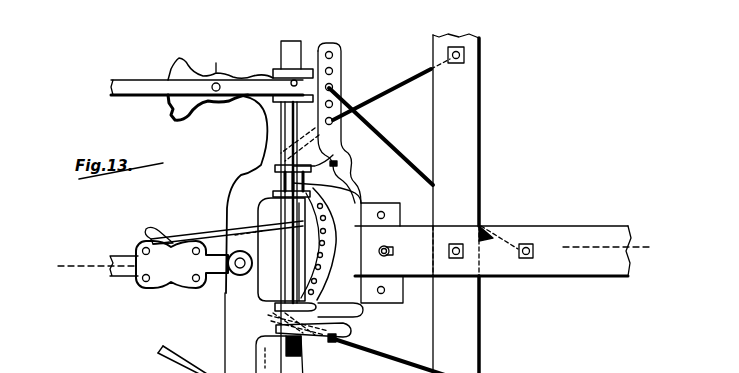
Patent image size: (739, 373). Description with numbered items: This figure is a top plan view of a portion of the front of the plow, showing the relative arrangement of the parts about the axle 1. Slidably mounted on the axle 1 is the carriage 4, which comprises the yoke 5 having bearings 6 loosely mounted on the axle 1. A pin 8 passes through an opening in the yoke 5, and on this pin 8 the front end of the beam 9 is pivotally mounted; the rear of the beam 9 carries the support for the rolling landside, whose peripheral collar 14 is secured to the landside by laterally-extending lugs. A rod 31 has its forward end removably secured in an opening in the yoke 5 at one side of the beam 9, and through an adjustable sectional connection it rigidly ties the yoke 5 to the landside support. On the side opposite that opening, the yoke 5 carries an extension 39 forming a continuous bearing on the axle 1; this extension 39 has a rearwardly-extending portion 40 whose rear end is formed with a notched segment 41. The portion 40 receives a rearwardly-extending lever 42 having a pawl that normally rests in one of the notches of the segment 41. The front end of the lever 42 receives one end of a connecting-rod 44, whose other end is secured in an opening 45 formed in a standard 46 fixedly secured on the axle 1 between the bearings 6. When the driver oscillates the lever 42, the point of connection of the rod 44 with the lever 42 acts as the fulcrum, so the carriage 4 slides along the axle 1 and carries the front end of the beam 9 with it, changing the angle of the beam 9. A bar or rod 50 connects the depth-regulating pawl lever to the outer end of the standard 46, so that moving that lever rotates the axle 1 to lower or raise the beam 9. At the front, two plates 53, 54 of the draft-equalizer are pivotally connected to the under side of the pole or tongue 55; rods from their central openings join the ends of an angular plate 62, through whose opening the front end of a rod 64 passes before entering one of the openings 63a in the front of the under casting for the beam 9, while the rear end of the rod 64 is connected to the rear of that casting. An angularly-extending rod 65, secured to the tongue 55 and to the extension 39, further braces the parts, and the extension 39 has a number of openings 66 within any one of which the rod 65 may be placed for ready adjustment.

The axle 1 is at (284, 63).
The carriage 4 is at (244, 194).
The yoke 5 is at (247, 237).
The bearings 6 is at (272, 165).
The pin 8 is at (232, 266).
The beam 9 is at (127, 280).
The peripheral collar 14 is at (367, 257).
The rod 31 is at (163, 349).
The extension 39 is at (340, 76).
The rearwardly-extending portion 40 is at (220, 60).
The notched segment 41 is at (165, 77).
The lever 42 is at (108, 82).
The connecting-rod 44 is at (300, 140).
The opening 45 is at (293, 77).
The standard 46 is at (325, 246).
The bar or rod 50 is at (258, 300).
The plate 53 is at (474, 335).
The plate 54 is at (476, 203).
The pole or tongue 55 is at (553, 229).
The angular plate 62 is at (264, 333).
The openings 63a is at (325, 208).
The rod 64 is at (199, 236).
The angularly-extending rod 65 is at (396, 136).
The openings 66 is at (335, 52).